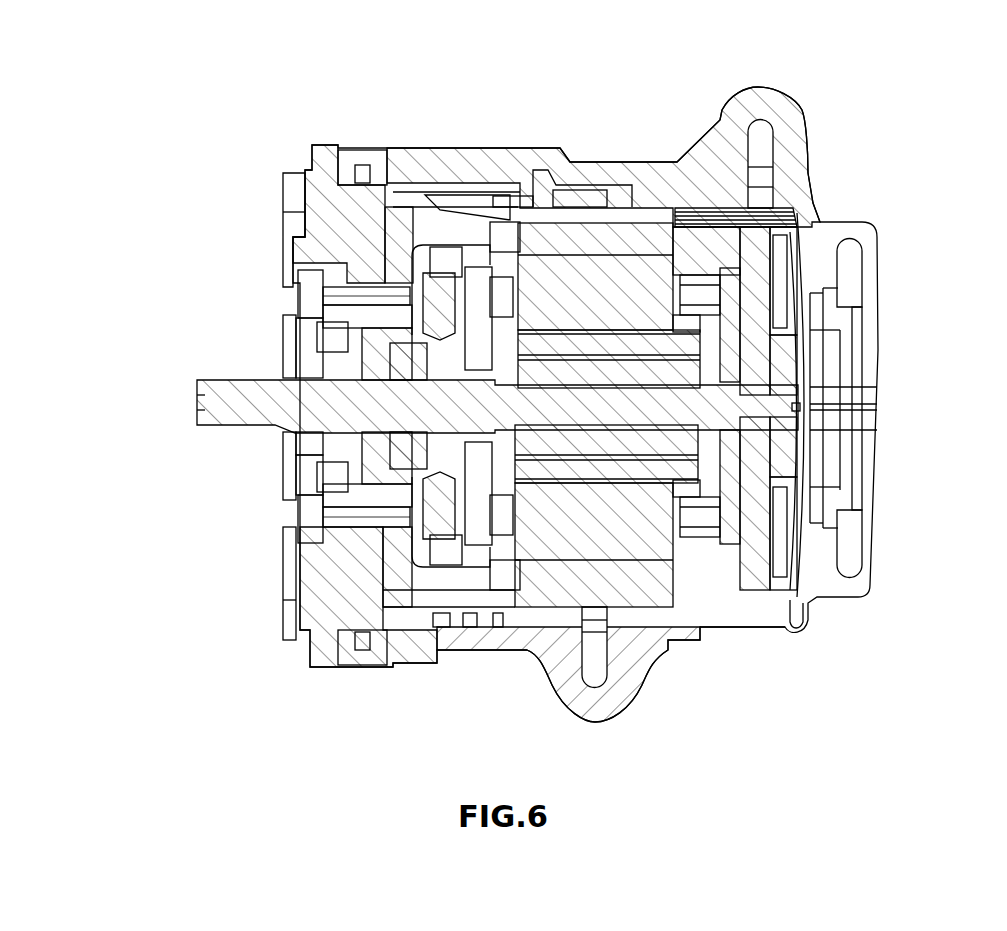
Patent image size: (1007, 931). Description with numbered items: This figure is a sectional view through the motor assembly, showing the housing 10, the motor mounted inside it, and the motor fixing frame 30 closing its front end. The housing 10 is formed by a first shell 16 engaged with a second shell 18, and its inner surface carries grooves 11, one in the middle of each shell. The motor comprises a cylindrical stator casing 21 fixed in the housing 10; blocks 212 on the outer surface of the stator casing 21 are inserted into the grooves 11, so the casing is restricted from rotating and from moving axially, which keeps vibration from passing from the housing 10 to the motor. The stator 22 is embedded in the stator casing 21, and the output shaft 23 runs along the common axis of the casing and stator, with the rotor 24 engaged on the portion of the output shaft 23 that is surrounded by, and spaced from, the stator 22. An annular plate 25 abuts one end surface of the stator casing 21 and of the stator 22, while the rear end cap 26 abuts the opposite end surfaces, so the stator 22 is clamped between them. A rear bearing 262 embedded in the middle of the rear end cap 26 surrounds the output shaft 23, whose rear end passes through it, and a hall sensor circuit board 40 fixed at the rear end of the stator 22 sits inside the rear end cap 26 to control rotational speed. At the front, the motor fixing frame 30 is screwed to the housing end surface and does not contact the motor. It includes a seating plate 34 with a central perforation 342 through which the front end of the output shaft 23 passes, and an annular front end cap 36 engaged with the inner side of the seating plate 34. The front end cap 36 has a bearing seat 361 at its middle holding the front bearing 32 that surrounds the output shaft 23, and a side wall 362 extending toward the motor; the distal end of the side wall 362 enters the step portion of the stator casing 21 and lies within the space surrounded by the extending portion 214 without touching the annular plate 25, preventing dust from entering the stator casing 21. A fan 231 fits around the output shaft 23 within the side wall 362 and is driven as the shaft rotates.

The housing 10 is at (357, 147).
The grooves 11 is at (592, 190).
The first shell 16 is at (780, 90).
The second shell 18 is at (625, 705).
The stator casing 21 is at (647, 222).
The blocks 212 is at (620, 197).
The extending portion 214 is at (505, 207).
The stator 22 is at (647, 538).
The output shaft 23 is at (200, 390).
The fan 231 is at (466, 525).
The rotor 24 is at (695, 478).
The annular plate 25 is at (485, 210).
The rear end cap 26 is at (753, 243).
The rear bearing 262 is at (753, 437).
The motor fixing frame 30 is at (270, 190).
The front bearing 32 is at (307, 450).
The seating plate 34 is at (327, 603).
The perforation 342 is at (337, 397).
The front end cap 36 is at (400, 575).
The bearing seat 361 is at (345, 495).
The side wall 362 is at (433, 235).
The hall sensor circuit board 40 is at (727, 310).